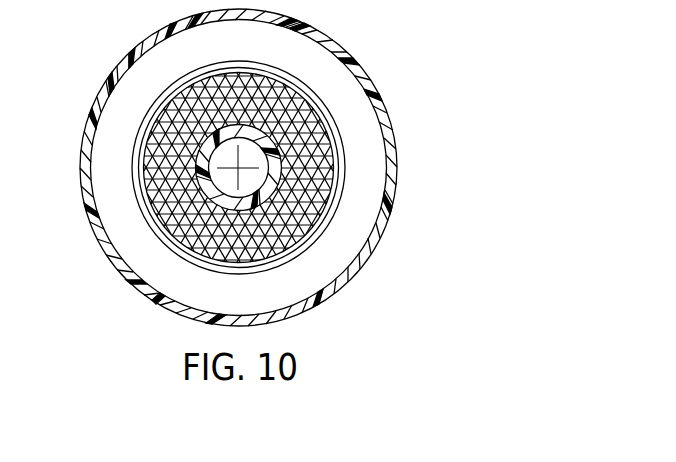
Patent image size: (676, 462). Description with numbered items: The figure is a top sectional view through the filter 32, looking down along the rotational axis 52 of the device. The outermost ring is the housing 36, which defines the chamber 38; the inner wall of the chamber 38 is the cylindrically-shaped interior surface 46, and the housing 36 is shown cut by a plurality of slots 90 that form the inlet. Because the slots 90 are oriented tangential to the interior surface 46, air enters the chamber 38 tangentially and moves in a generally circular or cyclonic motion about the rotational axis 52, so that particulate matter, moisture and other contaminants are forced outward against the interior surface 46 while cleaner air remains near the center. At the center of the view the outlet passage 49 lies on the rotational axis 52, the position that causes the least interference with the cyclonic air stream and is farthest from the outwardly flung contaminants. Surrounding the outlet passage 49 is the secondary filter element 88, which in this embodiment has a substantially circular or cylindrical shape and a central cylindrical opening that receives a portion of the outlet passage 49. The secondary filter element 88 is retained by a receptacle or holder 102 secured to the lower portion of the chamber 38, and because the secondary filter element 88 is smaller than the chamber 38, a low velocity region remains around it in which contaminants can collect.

The filter 32 is at (105, 293).
The housing 36 is at (386, 226).
The chamber 38 is at (258, 304).
The interior surface 46 is at (160, 298).
The outlet passage 49 is at (230, 82).
The rotational axis 52 is at (250, 162).
The secondary filter element 88 is at (316, 180).
The slots 90 is at (130, 58).
The holder 102 is at (303, 92).